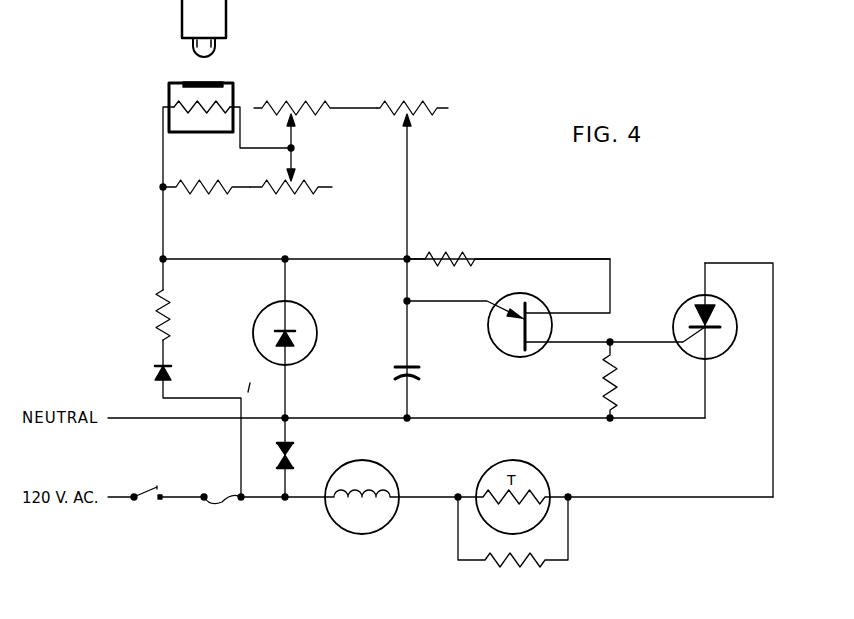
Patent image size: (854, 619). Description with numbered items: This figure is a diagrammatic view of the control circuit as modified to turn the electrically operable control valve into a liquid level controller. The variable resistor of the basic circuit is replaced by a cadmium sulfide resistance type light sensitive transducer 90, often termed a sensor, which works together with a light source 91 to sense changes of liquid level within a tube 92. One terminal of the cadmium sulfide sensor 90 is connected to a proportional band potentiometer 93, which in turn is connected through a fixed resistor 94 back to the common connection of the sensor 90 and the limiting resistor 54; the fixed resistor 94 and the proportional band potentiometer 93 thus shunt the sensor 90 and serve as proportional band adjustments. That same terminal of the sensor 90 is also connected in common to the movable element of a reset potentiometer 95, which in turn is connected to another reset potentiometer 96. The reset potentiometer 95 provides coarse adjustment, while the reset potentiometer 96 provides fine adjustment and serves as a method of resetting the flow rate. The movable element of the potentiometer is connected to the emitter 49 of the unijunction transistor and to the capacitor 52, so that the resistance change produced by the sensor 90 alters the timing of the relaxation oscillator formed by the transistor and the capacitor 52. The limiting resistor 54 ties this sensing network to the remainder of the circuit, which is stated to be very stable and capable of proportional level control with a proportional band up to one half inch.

The light source 91 is at (189, 22).
The cadmium sulfide resistance type light sensitive transducer 90 is at (170, 90).
The tube 92 is at (222, 84).
The reset potentiometer 95 is at (294, 108).
The reset potentiometer 96 is at (409, 108).
The fixed resistor 94 is at (202, 192).
The proportional band potentiometer 93 is at (298, 192).
The limiting resistor 54 is at (175, 330).
The capacitor 52 is at (422, 374).
The emitter 49 is at (505, 355).